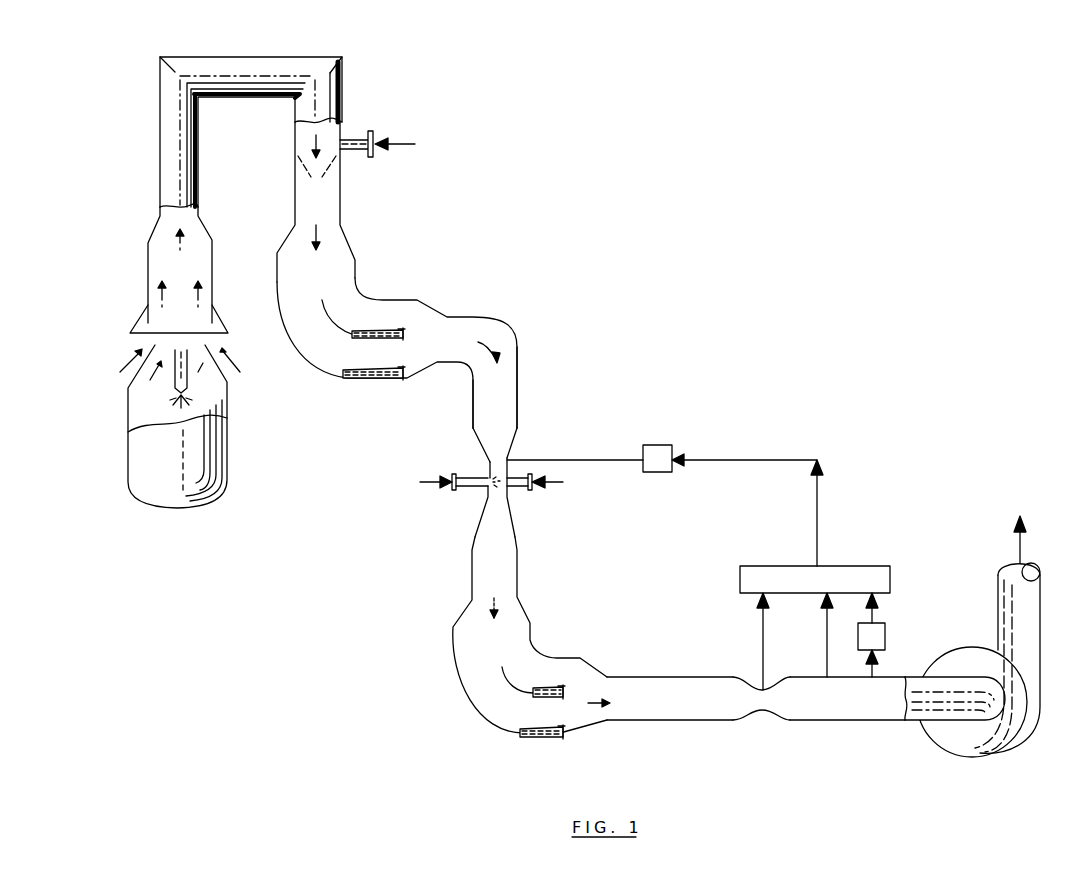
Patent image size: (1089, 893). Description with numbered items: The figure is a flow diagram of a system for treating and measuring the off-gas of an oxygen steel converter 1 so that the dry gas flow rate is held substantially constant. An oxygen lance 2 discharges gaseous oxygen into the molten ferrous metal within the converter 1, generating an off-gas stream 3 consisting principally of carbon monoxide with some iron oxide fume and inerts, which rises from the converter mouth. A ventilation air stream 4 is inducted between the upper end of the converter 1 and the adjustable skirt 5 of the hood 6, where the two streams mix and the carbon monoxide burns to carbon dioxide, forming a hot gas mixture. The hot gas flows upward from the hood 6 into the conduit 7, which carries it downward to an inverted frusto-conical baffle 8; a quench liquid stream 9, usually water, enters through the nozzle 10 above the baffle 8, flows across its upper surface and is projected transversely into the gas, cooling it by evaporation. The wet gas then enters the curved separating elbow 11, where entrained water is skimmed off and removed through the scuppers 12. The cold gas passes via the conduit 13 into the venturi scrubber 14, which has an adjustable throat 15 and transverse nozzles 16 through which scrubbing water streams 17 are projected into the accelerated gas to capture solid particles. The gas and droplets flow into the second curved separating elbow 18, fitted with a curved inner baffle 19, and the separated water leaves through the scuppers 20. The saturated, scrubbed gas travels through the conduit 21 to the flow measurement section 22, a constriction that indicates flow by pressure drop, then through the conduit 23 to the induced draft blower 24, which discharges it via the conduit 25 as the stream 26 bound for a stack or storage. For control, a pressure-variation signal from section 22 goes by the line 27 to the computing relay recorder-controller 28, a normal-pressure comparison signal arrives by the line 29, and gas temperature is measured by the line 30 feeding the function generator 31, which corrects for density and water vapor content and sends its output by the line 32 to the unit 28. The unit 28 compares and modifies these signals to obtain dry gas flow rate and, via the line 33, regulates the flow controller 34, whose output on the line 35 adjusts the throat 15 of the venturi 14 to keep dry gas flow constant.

The oxygen steel converter 1 is at (221, 440).
The oxygen lance 2 is at (188, 378).
The off-gas stream 3 is at (205, 365).
The ventilation air stream 4 is at (233, 360).
The adjustable skirt 5 is at (218, 316).
The hood 6 is at (212, 250).
The conduit 7 is at (198, 141).
The inverted frusto-conical baffle 8 is at (330, 178).
The quench liquid stream 9 is at (396, 146).
The nozzle 10 is at (352, 141).
The curved separating elbow 11 is at (322, 363).
The scuppers 12 is at (405, 334).
The conduit 13 is at (518, 385).
The venturi scrubber 14 is at (473, 446).
The adjustable throat 15 is at (490, 469).
The nozzles 16 is at (470, 486).
The scrubbing water streams 17 is at (426, 484).
The curved separating elbow 18 is at (465, 688).
The curved inner baffle 19 is at (504, 668).
The scuppers 20 is at (568, 692).
The conduit 21 is at (665, 722).
The flow measurement section 22 is at (762, 714).
The conduit 23 is at (878, 722).
The induced draft blower 24 is at (1030, 728).
The conduit 25 is at (1040, 590).
The discharge stream 26 is at (1020, 549).
The line 27 is at (763, 630).
The computing relay recorder-controller 28 is at (740, 578).
The line 29 is at (827, 628).
The line 30 is at (873, 669).
The function generator 31 is at (886, 636).
The line 32 is at (873, 609).
The line 33 is at (818, 525).
The flow controller 34 is at (657, 445).
The line 35 is at (582, 460).